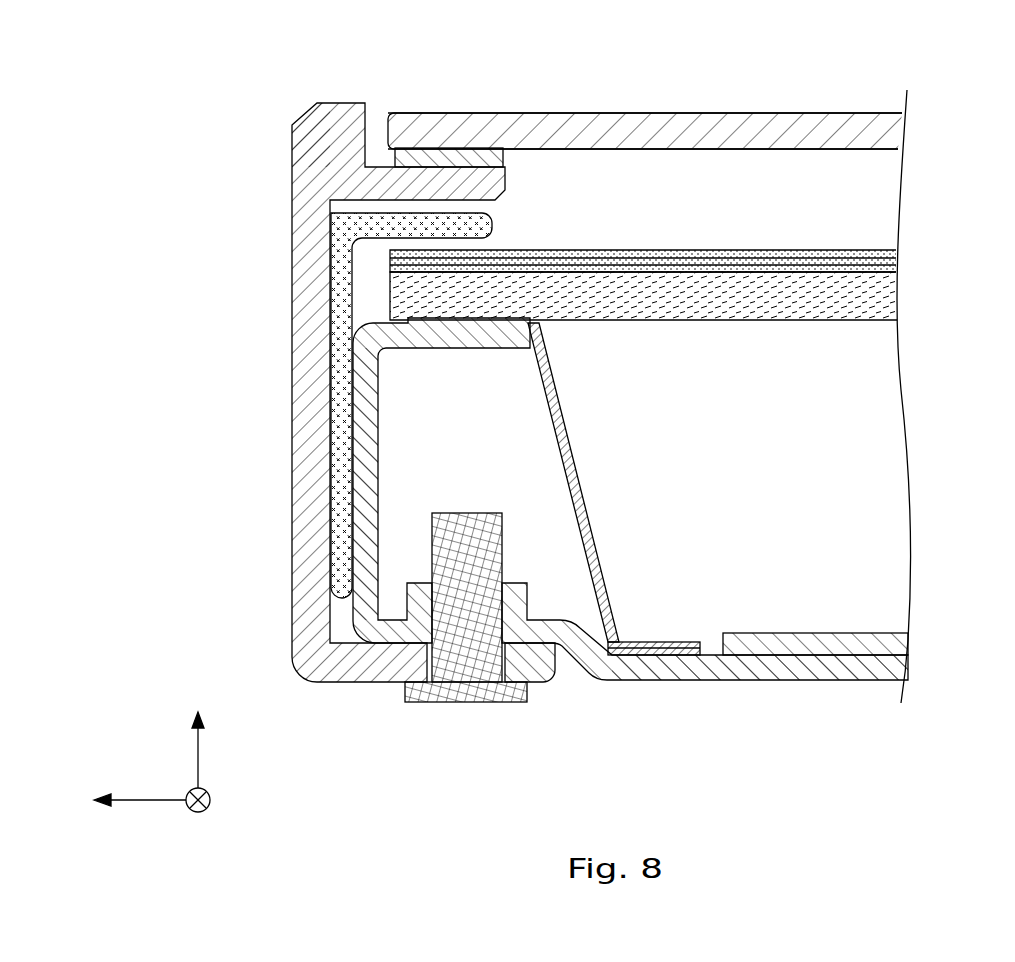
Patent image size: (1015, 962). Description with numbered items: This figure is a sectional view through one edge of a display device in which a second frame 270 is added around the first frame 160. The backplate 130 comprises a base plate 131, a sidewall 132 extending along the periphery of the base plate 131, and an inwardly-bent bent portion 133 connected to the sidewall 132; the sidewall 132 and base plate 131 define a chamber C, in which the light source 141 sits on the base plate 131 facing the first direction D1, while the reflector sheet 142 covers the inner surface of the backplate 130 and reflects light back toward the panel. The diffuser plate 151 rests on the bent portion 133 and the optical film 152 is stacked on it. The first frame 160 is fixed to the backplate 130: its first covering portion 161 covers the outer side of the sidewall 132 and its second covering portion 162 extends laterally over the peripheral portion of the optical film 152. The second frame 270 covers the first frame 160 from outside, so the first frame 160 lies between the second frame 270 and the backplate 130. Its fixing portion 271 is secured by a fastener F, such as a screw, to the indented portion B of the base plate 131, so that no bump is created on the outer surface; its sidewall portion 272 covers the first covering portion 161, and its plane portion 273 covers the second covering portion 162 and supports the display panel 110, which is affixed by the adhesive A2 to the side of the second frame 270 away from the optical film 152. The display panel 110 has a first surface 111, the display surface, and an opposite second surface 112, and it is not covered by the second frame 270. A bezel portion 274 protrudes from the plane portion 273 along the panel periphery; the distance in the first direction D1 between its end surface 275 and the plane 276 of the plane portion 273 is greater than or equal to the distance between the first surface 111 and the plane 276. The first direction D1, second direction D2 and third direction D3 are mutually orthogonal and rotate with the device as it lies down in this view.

The display panel 110 is at (891, 132).
The first surface 111 is at (805, 112).
The second surface 112 is at (712, 148).
The backplate 130 is at (893, 667).
The base plate 131 is at (667, 668).
The sidewall 132 is at (368, 410).
The bent portion 133 is at (457, 345).
The light source 141 is at (790, 642).
The reflector sheet 142 is at (580, 497).
The diffuser plate 151 is at (891, 295).
The optical film 152 is at (900, 250).
The first frame 160 is at (215, 188).
The first covering portion 161 is at (340, 275).
The second covering portion 162 is at (412, 223).
The second frame 270 is at (276, 155).
The fixing portion 271 is at (370, 670).
The sidewall portion 272 is at (310, 440).
The plane portion 273 is at (494, 182).
The bezel portion 274 is at (312, 124).
The end surface 275 is at (335, 103).
The plane 276 is at (427, 165).
The adhesive A2 is at (492, 152).
The indented portion B is at (561, 666).
The chamber C is at (404, 489).
The fastener F is at (456, 690).
The first direction D1 is at (197, 734).
The second direction D2 is at (120, 800).
The third direction D3 is at (215, 817).